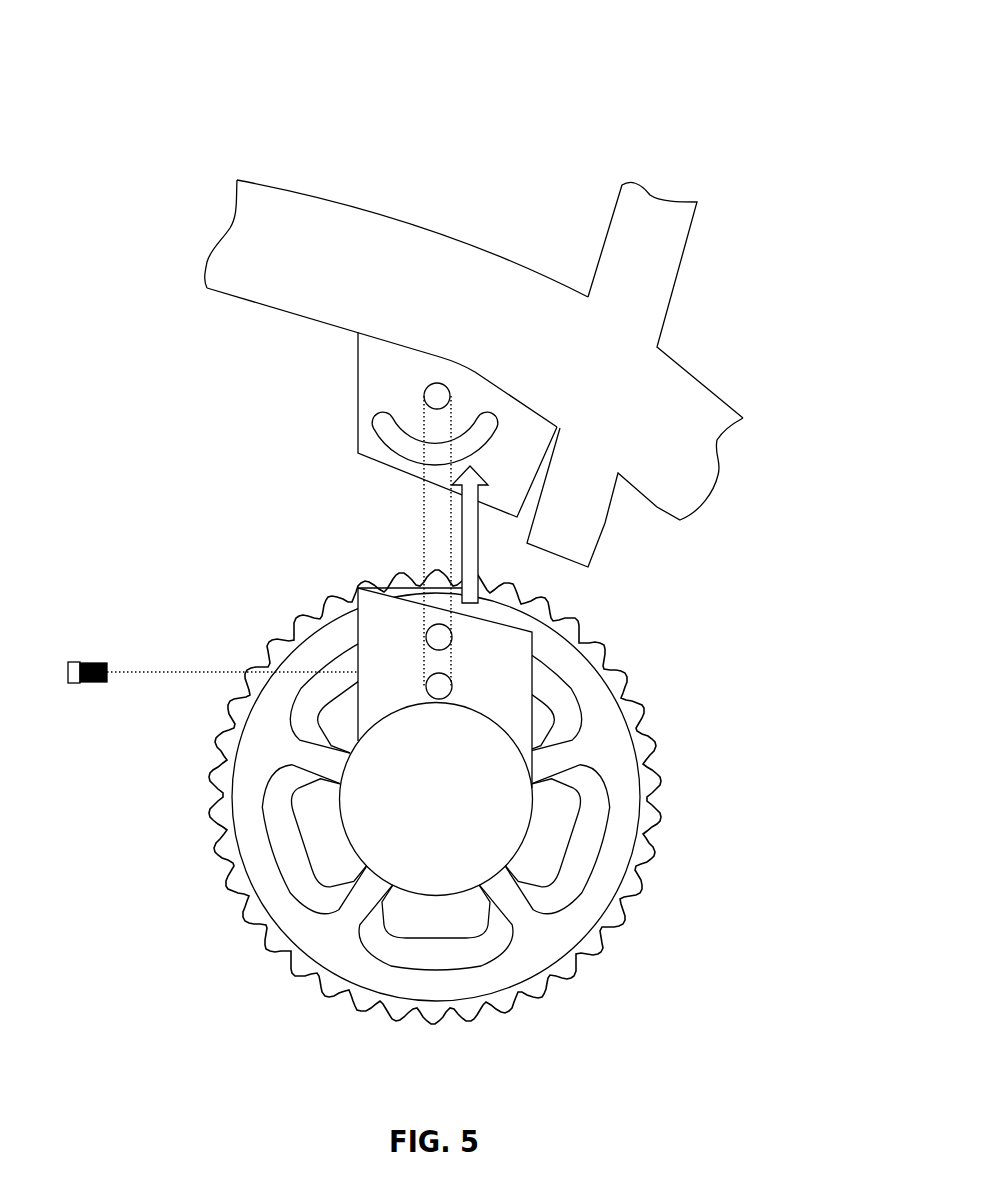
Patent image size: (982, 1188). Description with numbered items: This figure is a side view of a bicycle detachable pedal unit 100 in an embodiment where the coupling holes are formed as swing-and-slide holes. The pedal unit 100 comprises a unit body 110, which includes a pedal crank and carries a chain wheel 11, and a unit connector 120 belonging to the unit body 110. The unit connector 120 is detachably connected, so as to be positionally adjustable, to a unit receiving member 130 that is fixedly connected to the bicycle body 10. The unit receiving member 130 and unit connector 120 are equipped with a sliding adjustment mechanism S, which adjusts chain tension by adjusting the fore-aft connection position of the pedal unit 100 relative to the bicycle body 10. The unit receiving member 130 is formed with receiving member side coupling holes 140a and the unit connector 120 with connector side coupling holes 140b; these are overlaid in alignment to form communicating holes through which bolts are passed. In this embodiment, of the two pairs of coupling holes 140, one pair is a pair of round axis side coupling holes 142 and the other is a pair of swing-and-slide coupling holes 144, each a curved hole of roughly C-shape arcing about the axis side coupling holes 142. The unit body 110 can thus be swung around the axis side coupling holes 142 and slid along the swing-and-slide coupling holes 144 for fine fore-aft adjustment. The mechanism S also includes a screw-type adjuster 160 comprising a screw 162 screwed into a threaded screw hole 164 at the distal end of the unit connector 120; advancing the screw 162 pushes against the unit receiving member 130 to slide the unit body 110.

The bicycle body 10 is at (380, 233).
The chain wheel 11 is at (556, 948).
The sliding adjustment mechanism S is at (453, 370).
The bicycle detachable pedal unit 100 is at (183, 413).
The unit body 110 is at (497, 763).
The unit connector 120 is at (497, 688).
The unit receiving member 130 is at (363, 372).
The coupling holes 140 is at (467, 598).
The receiving member side coupling holes 140a is at (507, 402).
The axis side coupling holes 142 is at (446, 392).
The swing-and-slide coupling holes 144 is at (382, 424).
The connector side coupling holes 140b is at (441, 637).
The screw-type adjuster 160 is at (189, 675).
The screw 162 is at (80, 660).
The threaded screw hole 164 is at (356, 673).